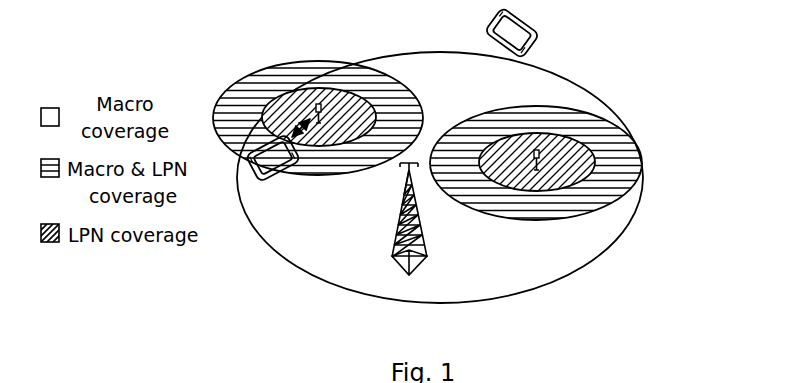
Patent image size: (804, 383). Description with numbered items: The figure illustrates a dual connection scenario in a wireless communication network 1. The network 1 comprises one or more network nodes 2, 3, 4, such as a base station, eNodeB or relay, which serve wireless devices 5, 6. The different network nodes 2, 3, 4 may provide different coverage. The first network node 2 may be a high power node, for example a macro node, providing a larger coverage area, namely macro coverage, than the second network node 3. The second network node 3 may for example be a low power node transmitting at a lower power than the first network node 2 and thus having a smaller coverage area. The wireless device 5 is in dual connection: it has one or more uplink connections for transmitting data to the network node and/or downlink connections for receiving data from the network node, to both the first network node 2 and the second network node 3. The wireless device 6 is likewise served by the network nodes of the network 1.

The wireless communication network 1 is at (673, 86).
The first network node 2 is at (422, 243).
The second network node 3 is at (319, 104).
The network node 4 is at (540, 149).
The wireless device 5 is at (272, 165).
The wireless device 6 is at (520, 28).